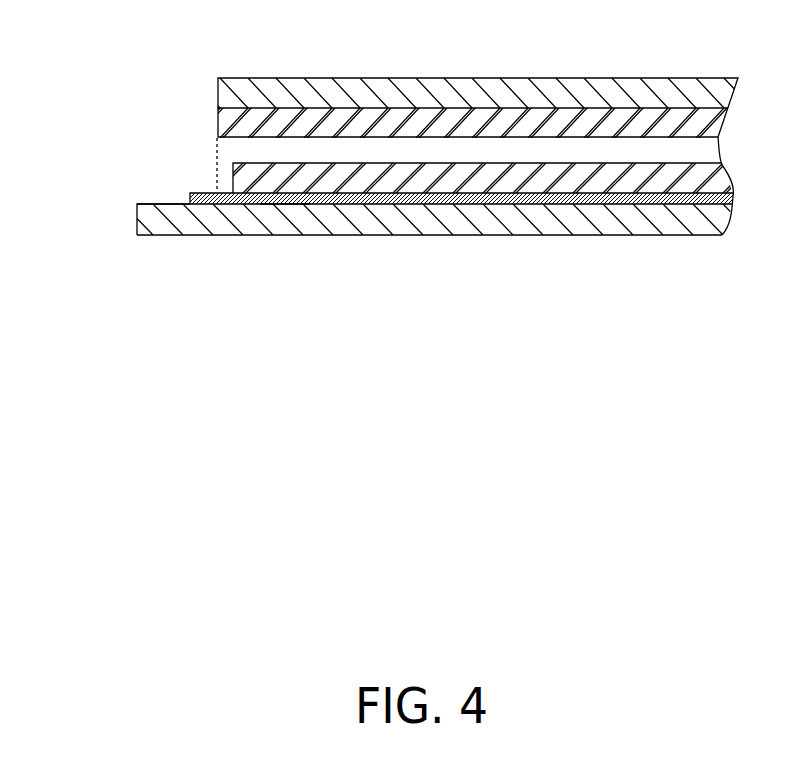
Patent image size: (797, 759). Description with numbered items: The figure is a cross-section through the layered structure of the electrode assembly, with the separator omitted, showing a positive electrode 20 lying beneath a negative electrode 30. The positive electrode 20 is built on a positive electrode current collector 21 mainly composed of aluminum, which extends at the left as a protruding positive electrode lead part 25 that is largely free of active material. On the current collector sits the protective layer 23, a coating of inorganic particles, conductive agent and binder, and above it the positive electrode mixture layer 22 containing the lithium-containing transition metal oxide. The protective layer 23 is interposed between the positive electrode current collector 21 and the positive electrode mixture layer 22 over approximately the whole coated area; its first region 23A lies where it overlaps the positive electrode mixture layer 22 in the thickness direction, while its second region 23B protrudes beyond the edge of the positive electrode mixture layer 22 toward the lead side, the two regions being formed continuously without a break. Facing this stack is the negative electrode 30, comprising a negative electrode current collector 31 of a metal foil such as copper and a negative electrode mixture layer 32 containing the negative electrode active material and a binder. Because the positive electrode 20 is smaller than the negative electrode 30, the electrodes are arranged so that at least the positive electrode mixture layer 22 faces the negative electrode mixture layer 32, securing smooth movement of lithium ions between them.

The positive electrode 20 is at (136, 220).
The positive electrode current collector 21 is at (407, 216).
The positive electrode mixture layer 22 is at (448, 195).
The protective layer 23 is at (616, 205).
The first region 23A is at (284, 207).
The second region 23B is at (210, 192).
The positive electrode lead part 25 is at (162, 203).
The negative electrode 30 is at (215, 97).
The negative electrode current collector 31 is at (391, 86).
The negative electrode mixture layer 32 is at (438, 110).